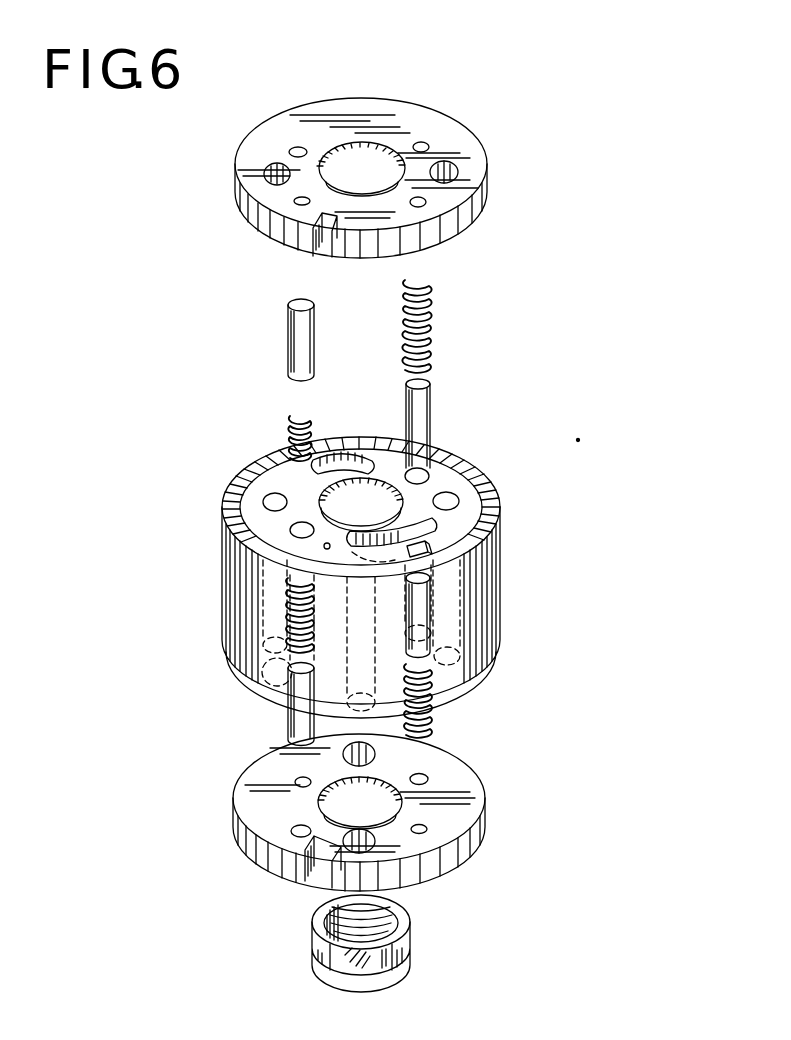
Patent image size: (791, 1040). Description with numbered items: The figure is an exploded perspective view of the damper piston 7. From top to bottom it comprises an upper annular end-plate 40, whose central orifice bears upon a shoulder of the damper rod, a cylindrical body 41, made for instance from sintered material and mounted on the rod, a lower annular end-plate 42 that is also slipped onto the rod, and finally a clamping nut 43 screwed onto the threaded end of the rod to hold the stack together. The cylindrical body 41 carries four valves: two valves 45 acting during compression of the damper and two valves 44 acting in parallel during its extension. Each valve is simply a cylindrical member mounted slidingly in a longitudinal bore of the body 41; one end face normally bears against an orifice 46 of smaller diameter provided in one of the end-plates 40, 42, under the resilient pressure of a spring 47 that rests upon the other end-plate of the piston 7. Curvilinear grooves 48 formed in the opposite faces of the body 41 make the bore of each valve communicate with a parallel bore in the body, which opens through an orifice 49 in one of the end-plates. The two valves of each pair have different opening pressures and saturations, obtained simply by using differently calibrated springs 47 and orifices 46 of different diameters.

The piston 7 is at (226, 309).
The upper annular end-plate 40 is at (238, 192).
The cylindrical body 41 is at (230, 577).
The lower annular end-plate 42 is at (233, 825).
The clamping nut 43 is at (314, 951).
The valve 44 is at (288, 345).
The valve 45 is at (406, 403).
The orifice 46 is at (428, 146).
The spring 47 is at (405, 311).
The curvilinear groove 48 is at (341, 456).
The orifice 49 is at (280, 170).